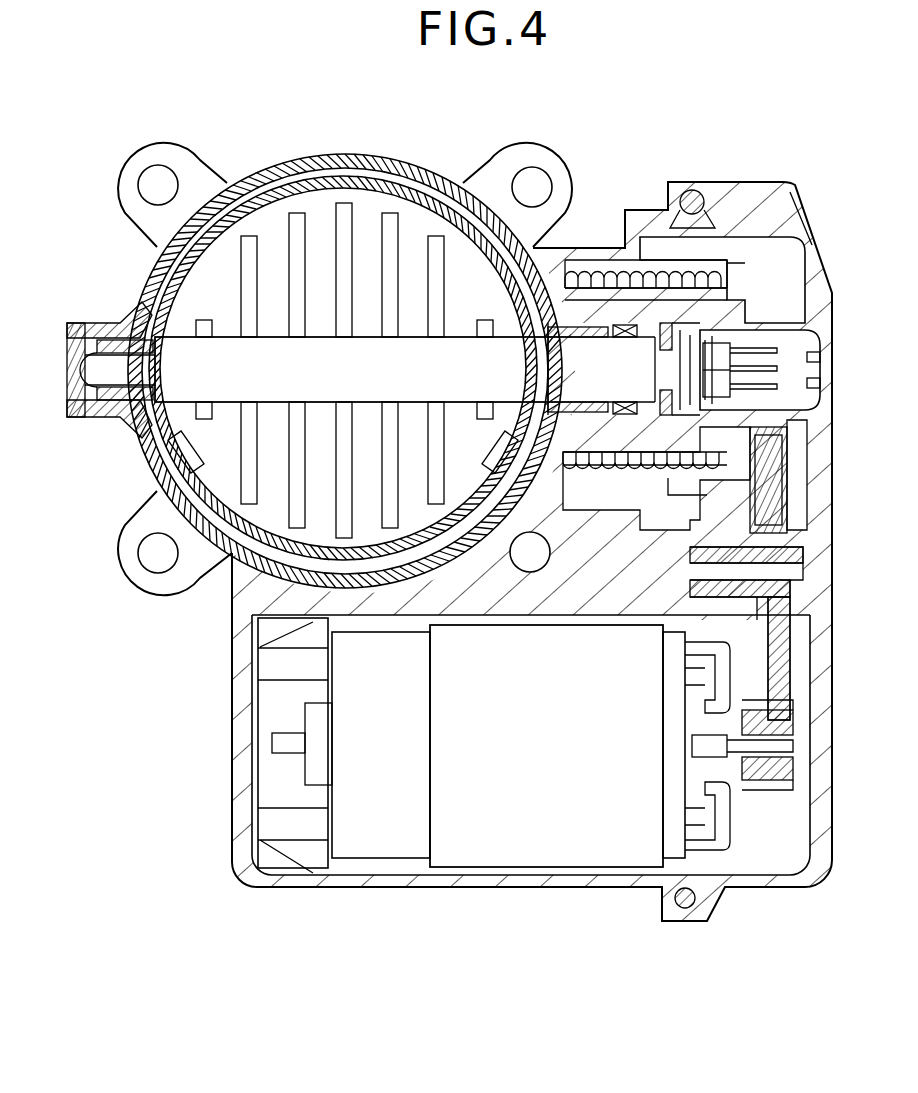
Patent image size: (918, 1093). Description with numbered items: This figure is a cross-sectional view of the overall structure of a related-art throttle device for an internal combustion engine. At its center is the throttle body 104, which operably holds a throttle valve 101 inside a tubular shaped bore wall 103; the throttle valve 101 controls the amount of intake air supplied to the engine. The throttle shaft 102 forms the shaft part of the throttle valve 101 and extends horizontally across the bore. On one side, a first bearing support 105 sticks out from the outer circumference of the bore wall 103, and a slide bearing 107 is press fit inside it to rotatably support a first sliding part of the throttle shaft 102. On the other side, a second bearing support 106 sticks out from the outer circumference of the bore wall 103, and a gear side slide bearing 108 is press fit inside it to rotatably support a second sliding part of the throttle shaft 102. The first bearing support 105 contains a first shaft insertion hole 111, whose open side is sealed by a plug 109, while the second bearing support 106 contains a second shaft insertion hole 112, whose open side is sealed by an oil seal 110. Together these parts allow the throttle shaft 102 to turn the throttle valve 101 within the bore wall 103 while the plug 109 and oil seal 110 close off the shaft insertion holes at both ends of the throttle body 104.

The throttle valve 101 is at (264, 210).
The throttle shaft 102 is at (327, 383).
The bore wall 103 is at (350, 176).
The throttle body 104 is at (430, 155).
The first bearing support 105 is at (116, 328).
The second bearing support 106 is at (592, 297).
The slide bearing 107 is at (123, 400).
The gear side slide bearing 108 is at (608, 456).
The plug 109 is at (74, 419).
The oil seal 110 is at (628, 338).
The first shaft insertion hole 111 is at (92, 332).
The second shaft insertion hole 112 is at (567, 338).